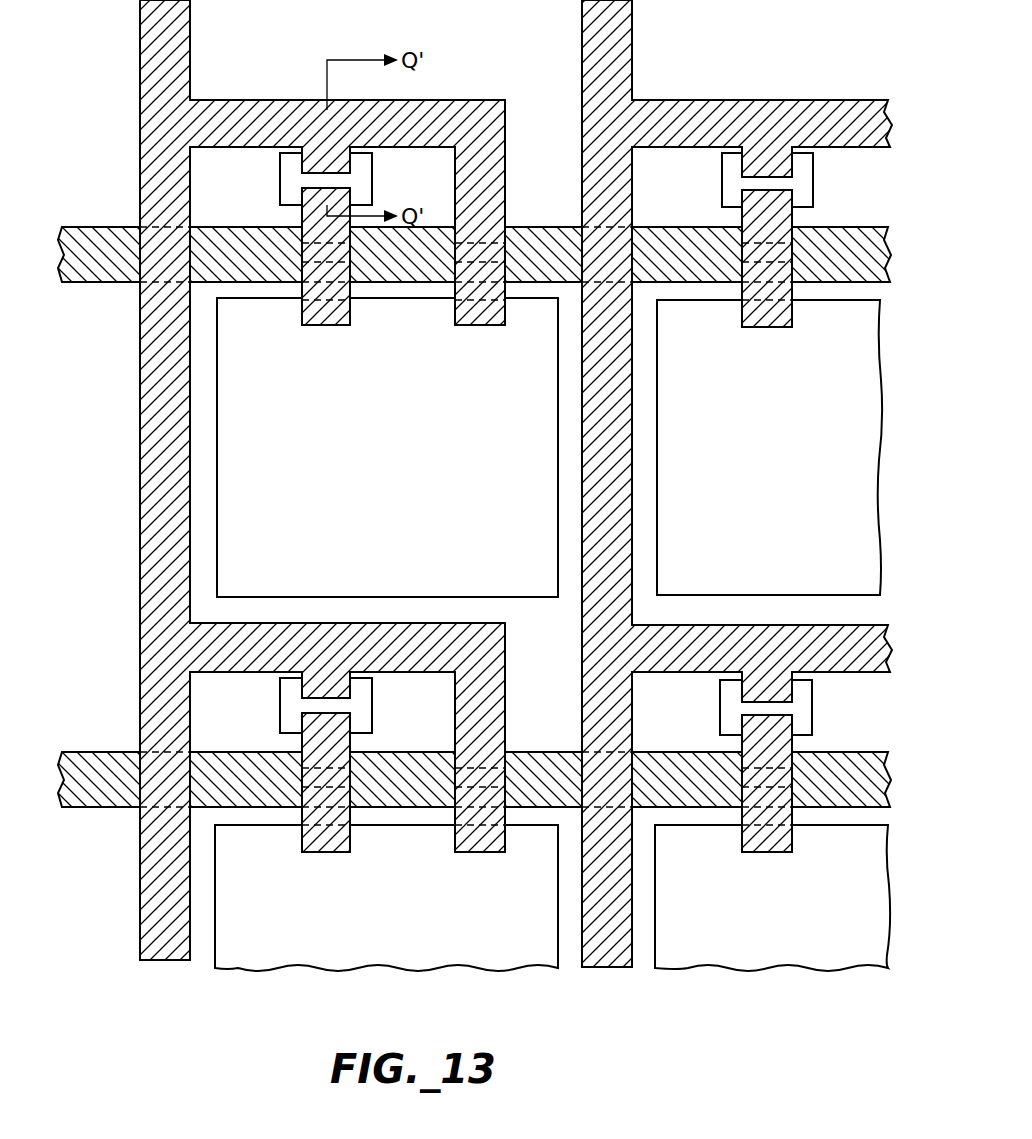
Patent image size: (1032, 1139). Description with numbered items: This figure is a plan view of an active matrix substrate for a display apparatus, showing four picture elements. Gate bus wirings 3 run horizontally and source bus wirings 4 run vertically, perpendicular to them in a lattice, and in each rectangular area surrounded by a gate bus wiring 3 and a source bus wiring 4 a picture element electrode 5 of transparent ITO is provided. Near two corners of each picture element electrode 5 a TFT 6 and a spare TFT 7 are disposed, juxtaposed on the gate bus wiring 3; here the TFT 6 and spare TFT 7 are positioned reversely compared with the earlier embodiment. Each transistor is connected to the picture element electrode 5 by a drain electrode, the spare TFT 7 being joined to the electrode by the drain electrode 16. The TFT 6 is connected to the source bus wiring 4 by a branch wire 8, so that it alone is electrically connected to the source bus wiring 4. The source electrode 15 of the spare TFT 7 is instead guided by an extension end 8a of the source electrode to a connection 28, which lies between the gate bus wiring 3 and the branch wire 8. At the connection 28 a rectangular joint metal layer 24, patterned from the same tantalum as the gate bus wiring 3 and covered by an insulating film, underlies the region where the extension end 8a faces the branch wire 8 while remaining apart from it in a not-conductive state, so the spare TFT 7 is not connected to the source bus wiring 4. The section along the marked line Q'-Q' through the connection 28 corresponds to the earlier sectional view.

The gate bus wiring 3 is at (54, 238).
The source bus wiring 4 is at (178, 33).
The picture element electrode 5 is at (384, 476).
The TFT 6 is at (440, 282).
The spare TFT 7 is at (292, 280).
The branch wire 8 is at (445, 108).
The extension end of source electrode 8a is at (312, 213).
The source electrode 15 is at (327, 205).
The drain electrode 16 is at (336, 318).
The joint metal layer 24 is at (290, 162).
The connection 28 is at (384, 186).